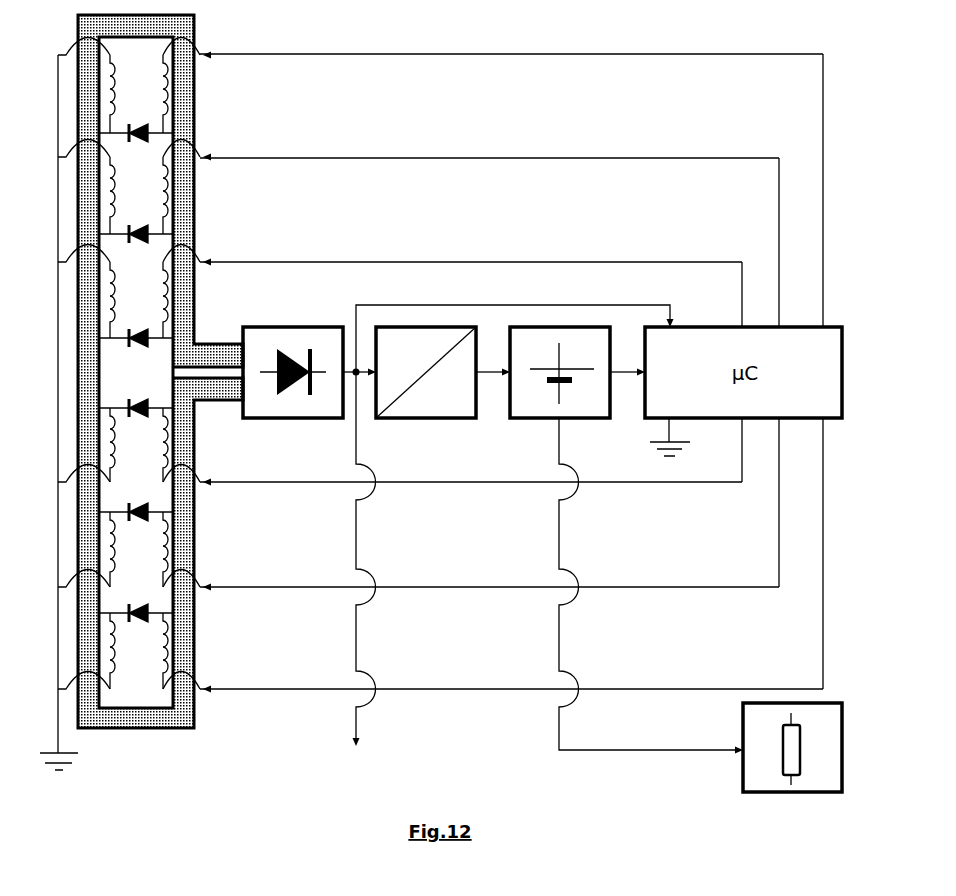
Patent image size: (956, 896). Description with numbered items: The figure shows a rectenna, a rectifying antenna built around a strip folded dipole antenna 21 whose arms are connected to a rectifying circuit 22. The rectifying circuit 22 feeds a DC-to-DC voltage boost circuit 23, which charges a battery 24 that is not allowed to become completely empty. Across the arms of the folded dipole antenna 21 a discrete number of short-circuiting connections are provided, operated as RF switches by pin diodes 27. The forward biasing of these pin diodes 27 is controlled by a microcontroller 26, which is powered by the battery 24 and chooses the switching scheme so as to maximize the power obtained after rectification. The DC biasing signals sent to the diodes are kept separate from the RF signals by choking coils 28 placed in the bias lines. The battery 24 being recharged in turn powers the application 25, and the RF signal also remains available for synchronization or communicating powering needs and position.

The folded dipole antenna 21 is at (160, 371).
The rectifying circuit 22 is at (293, 384).
The DC-to-DC voltage boost circuit 23 is at (426, 384).
The battery 24 is at (560, 384).
The application 25 is at (782, 747).
The microcontroller 26 is at (665, 437).
The pin diodes 27 is at (136, 361).
The choking coils 28 is at (139, 372).